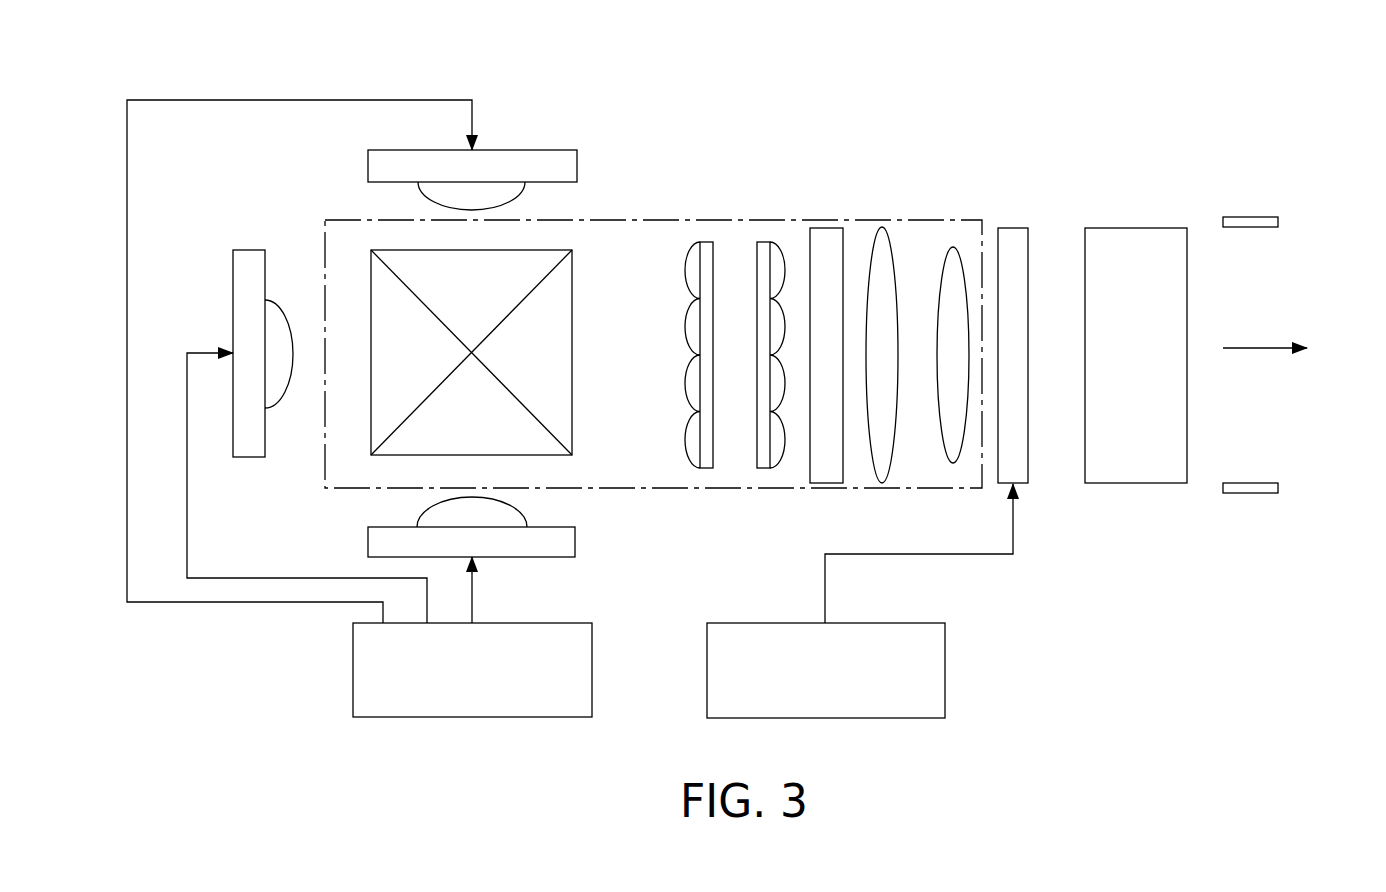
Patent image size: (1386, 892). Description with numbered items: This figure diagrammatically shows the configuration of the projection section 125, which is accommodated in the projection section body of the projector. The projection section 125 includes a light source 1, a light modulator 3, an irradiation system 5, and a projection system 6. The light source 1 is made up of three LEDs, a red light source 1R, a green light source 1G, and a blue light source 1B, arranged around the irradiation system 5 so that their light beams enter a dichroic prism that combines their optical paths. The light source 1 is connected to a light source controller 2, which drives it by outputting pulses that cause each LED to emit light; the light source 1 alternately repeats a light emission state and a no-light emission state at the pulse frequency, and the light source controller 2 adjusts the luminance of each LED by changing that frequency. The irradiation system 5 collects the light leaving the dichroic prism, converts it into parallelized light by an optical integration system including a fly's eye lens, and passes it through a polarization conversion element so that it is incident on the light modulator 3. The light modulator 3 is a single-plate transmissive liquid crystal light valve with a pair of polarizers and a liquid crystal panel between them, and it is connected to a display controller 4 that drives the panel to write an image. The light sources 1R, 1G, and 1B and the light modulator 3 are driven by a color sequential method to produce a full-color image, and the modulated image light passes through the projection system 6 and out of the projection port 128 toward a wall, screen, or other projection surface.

The projection section 125 is at (852, 120).
The light source 1 is at (448, 342).
The red light source LED 1R is at (577, 165).
The green light source LED 1G is at (247, 250).
The blue light source LED 1B is at (575, 545).
The light source controller 2 is at (530, 623).
The light modulator 3 is at (1013, 228).
The display controller 4 is at (890, 623).
The irradiation system 5 is at (918, 220).
The projection system 6 is at (1135, 228).
The projection port 128 is at (1272, 218).